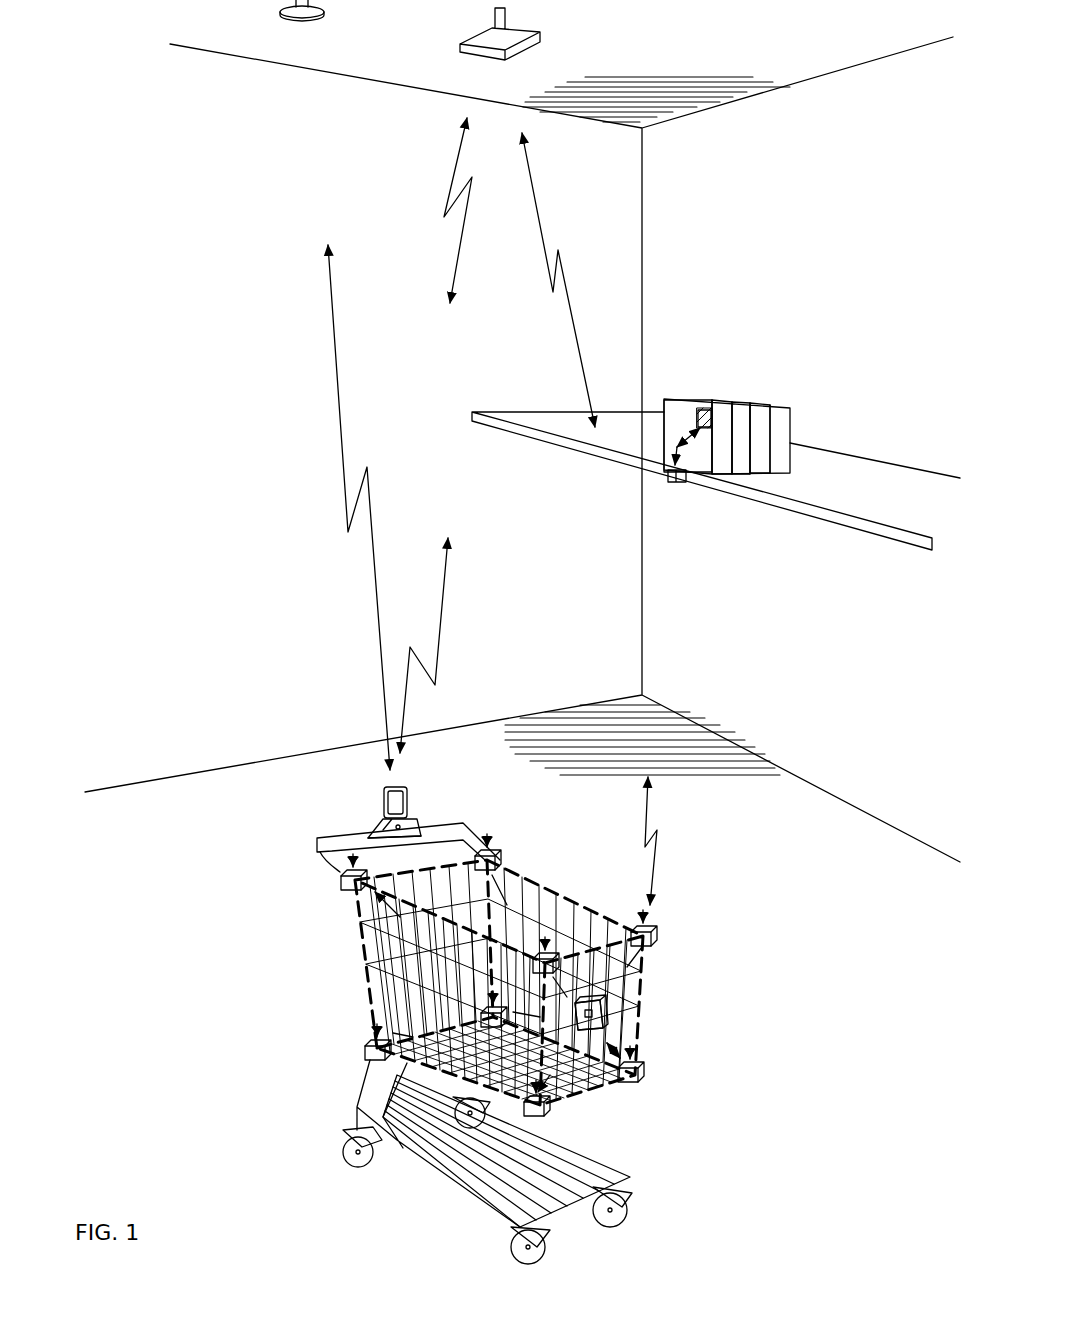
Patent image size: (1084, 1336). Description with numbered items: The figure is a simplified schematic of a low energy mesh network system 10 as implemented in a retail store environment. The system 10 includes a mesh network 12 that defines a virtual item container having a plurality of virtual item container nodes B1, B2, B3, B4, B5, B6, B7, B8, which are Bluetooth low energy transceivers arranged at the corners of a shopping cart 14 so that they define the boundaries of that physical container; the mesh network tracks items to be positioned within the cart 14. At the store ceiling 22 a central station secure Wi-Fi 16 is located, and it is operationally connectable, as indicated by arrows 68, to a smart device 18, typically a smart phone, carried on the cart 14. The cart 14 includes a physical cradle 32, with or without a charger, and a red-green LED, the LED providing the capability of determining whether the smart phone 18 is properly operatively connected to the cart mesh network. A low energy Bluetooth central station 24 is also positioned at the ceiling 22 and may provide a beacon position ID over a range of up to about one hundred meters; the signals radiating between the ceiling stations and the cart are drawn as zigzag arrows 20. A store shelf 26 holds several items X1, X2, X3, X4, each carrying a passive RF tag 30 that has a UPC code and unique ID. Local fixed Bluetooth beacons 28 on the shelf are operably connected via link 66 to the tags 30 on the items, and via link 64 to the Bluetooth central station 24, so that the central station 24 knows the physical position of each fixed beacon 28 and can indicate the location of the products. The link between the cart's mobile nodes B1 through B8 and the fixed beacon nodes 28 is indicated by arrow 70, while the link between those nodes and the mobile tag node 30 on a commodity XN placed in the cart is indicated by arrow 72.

The low energy mesh network system 10 is at (150, 140).
The mesh network 12 is at (355, 977).
The shopping cart 14 is at (570, 910).
The central station secure Wi-Fi 16 is at (295, 20).
The smart device 18 is at (383, 800).
The wireless signals 20 is at (458, 243).
The store ceiling 22 is at (676, 26).
The low energy Bluetooth central station 24 is at (480, 55).
The store shelf 26 is at (880, 510).
The local fixed Bluetooth beacon 28 is at (663, 478).
The RF tag 30 is at (704, 432).
The physical cradle 32 is at (413, 823).
The link 64 is at (568, 320).
The link 66 is at (660, 405).
The Wi-Fi link 68 is at (340, 420).
The link 70 is at (655, 853).
The link 72 is at (625, 1040).
The red-green LED is at (365, 828).
The virtual item container node B1 is at (334, 883).
The virtual item container node B2 is at (535, 945).
The virtual item container node B3 is at (663, 932).
The virtual item container node B4 is at (505, 852).
The virtual item container node B5 is at (481, 1000).
The virtual item container node B6 is at (361, 1051).
The virtual item container node B7 is at (554, 1111).
The virtual item container node B8 is at (646, 1075).
The item X1 is at (680, 430).
The item X2 is at (705, 408).
The item X3 is at (742, 408).
The item X4 is at (770, 403).
The commodity XN is at (600, 998).